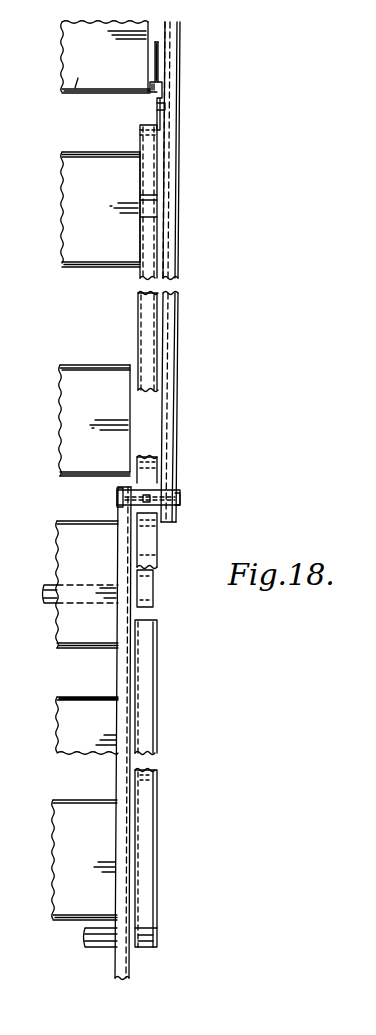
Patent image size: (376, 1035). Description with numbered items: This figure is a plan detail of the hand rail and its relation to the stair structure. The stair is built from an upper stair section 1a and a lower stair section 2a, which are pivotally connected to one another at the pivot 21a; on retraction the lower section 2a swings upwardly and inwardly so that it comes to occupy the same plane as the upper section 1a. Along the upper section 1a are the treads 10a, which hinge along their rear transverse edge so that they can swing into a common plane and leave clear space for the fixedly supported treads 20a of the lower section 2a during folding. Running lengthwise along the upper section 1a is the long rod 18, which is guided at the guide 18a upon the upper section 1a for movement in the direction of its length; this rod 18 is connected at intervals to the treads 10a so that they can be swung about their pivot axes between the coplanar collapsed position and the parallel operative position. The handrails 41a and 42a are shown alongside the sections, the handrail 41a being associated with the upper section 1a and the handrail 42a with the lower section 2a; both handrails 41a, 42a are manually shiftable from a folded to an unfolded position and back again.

The upper stair section 1a is at (182, 345).
The lower stair section 2a is at (115, 673).
The treads of the upper section 10a is at (65, 90).
The long rod 18 is at (158, 66).
The rod guide 18a is at (163, 102).
The fixedly supported treads of the lower section 20a is at (66, 438).
The pivotal connection 21a is at (182, 500).
The handrail 41a is at (150, 322).
The handrail 42a is at (148, 735).